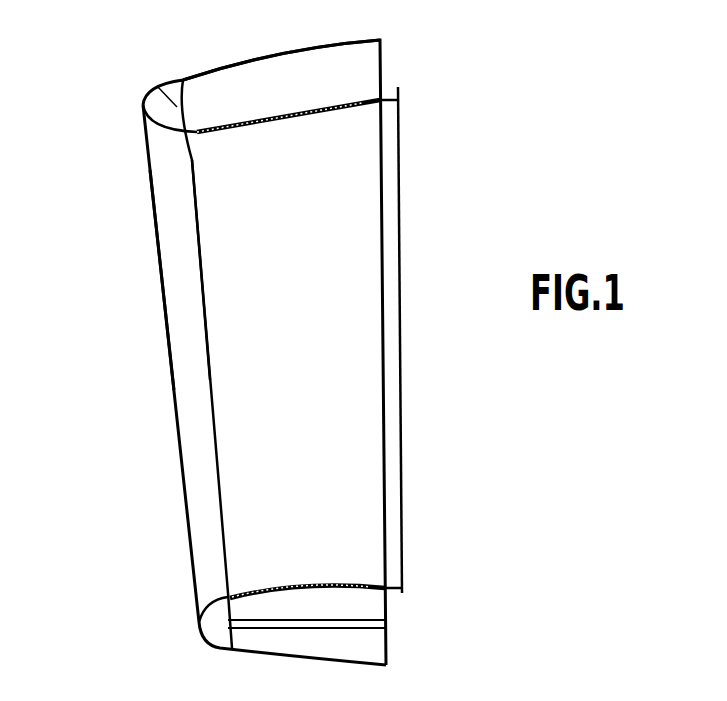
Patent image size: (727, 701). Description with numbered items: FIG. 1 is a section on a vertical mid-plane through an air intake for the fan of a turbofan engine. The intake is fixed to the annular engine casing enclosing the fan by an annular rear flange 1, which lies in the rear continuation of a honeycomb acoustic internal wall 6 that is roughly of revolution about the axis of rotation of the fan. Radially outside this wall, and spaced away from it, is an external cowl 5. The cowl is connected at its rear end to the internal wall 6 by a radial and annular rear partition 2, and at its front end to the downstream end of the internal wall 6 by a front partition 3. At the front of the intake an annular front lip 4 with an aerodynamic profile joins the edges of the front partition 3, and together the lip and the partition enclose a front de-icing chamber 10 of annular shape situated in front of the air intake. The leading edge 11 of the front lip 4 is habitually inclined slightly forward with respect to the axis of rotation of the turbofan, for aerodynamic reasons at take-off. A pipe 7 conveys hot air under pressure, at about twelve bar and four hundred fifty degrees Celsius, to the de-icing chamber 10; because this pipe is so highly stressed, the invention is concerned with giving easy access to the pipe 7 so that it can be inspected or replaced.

The annular rear flange 1 is at (398, 147).
The rear partition 2 is at (380, 70).
The front partition 3 is at (156, 88).
The annular front lip 4 is at (143, 105).
The external cowl 5 is at (265, 55).
The honeycomb acoustic internal wall 6 is at (267, 118).
The pipe 7 is at (357, 624).
The front de-icing chamber 10 is at (181, 229).
The leading edge 11 is at (172, 372).